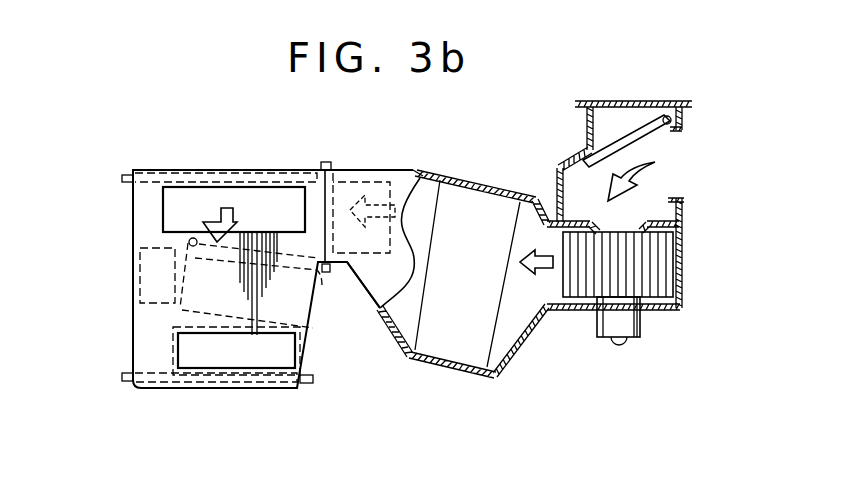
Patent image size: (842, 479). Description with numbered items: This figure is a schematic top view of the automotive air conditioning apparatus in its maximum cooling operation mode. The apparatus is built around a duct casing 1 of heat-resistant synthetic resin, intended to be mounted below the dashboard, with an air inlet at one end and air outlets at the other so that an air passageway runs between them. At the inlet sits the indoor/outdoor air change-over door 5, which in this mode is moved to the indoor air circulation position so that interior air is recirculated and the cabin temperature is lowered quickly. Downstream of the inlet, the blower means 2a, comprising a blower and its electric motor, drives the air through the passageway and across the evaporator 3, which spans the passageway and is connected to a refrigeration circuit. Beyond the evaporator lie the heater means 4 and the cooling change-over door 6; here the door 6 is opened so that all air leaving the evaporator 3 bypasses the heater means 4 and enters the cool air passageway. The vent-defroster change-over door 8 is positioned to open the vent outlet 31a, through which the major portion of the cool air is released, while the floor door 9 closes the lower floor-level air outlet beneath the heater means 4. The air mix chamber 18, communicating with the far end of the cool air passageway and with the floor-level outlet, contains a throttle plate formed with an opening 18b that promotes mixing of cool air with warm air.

The duct casing 1 is at (443, 180).
The blower means 2a is at (640, 327).
The evaporator 3 is at (450, 345).
The heater means 4 is at (293, 295).
The indoor/outdoor air change-over door 5 is at (635, 130).
The cooling change-over door 6 is at (370, 182).
The vent-defroster change-over door 8 is at (207, 170).
The floor door 9 is at (202, 368).
The air mix chamber 18 is at (147, 332).
The opening 18b is at (150, 277).
The vent outlet 31a is at (172, 212).